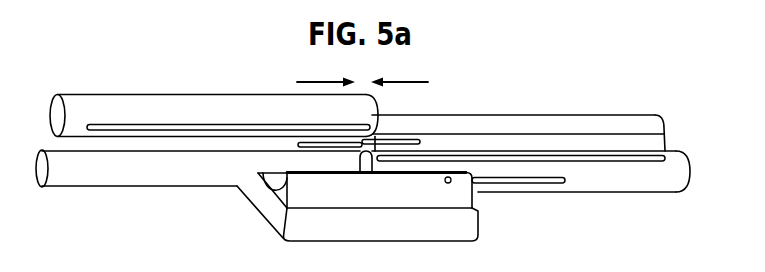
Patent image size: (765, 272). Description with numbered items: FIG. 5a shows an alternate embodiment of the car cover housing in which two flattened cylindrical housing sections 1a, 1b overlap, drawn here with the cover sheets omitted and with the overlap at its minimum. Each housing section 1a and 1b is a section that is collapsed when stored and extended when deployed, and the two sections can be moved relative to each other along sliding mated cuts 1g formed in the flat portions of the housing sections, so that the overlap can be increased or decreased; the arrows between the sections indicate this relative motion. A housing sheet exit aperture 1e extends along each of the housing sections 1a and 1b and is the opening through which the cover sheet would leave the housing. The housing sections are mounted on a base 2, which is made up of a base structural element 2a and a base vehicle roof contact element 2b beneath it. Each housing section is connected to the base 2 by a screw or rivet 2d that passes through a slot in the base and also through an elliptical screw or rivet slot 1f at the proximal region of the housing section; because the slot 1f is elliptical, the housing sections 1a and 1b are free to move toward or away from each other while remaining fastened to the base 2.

The housing section 1a is at (368, 70).
The housing section 1b is at (658, 72).
The housing sheet exit aperture 1e is at (172, 128).
The sliding mated cuts 1g is at (308, 145).
The elliptical screw or rivet slot 1f is at (547, 183).
The base 2 is at (375, 205).
The base structural element 2a is at (502, 170).
The base vehicle roof contact element 2b is at (502, 205).
The screw or rivet 2d is at (450, 182).